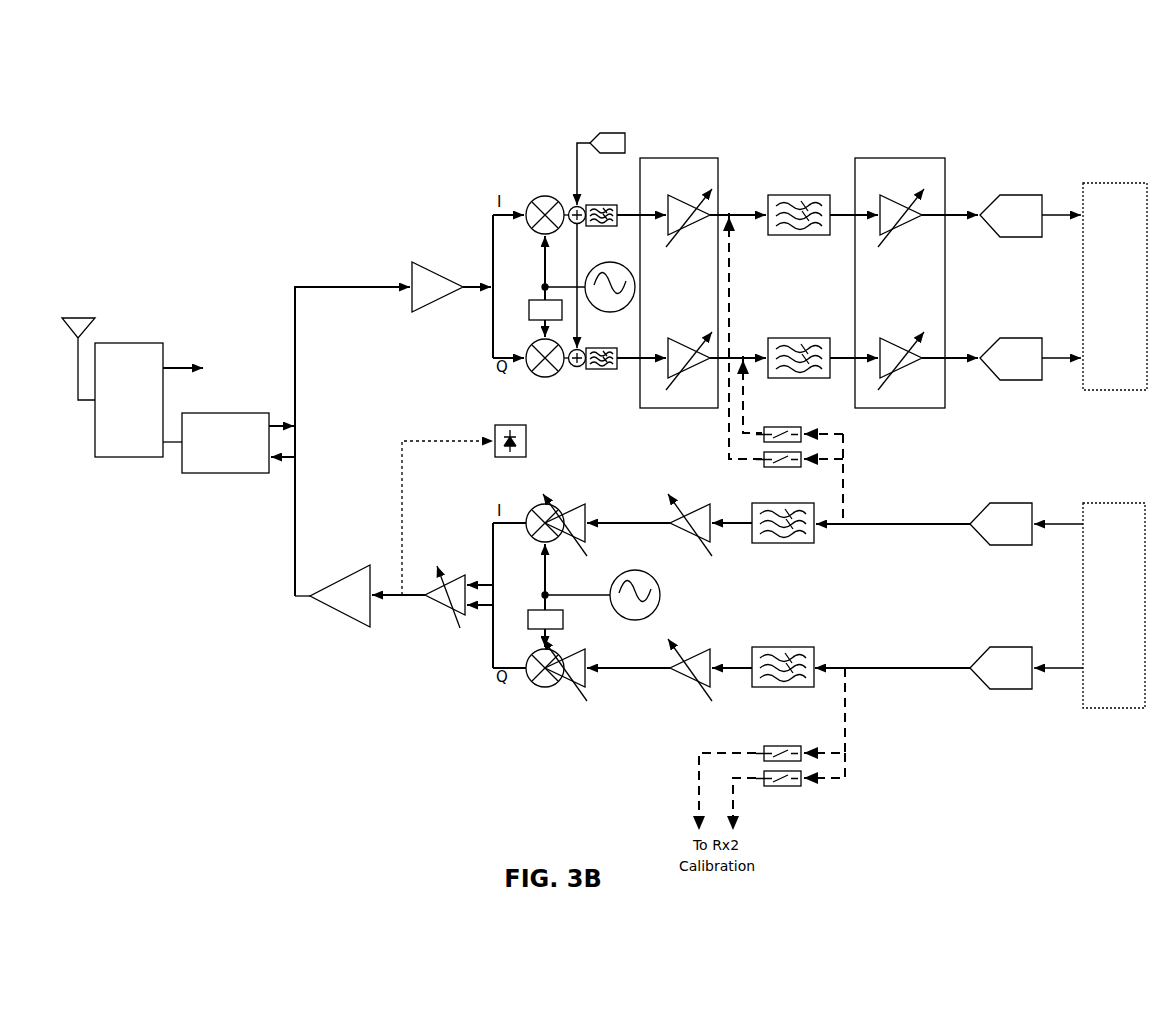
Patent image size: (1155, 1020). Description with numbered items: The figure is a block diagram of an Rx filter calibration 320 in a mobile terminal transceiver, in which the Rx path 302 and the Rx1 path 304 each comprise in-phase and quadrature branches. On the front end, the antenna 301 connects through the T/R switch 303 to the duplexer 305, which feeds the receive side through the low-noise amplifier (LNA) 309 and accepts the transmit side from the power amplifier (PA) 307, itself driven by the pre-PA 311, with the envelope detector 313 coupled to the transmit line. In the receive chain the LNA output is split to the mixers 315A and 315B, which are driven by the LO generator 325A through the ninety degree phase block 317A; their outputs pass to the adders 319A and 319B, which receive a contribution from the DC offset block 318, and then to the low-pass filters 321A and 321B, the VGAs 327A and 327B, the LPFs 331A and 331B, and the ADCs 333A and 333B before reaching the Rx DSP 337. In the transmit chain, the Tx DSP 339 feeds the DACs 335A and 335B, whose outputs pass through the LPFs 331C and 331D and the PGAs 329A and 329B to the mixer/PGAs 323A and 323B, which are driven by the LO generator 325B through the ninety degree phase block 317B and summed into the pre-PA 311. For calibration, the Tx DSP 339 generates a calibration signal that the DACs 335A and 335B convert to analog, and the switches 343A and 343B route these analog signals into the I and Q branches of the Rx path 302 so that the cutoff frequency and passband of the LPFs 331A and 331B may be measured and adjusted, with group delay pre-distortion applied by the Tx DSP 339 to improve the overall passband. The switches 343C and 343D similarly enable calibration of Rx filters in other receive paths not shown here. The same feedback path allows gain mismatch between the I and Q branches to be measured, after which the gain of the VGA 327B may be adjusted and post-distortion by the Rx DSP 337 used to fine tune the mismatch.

The Rx filter calibration 320 is at (120, 92).
The Rx path 302 is at (388, 154).
The Rx1 path 304 is at (351, 713).
The antenna 301 is at (65, 313).
The T/R switch 303 is at (116, 432).
The duplexer 305 is at (213, 463).
The power amplifier (PA) 307 is at (339, 572).
The low-noise amplifier (LNA) 309 is at (414, 262).
The pre-PA 311 is at (432, 609).
The envelope detector 313 is at (527, 438).
The mixer 315A is at (532, 196).
The mixer 315B is at (554, 385).
The 90 degree phase block 317A is at (527, 299).
The 90 degree phase block 317B is at (529, 608).
The DC offset block 318 is at (604, 131).
The adder 319A is at (600, 228).
The adder 319B is at (592, 368).
The low-pass filter (LPF) 321A is at (597, 206).
The low-pass filter (LPF) 321B is at (597, 350).
The mixer/PGA 323A is at (532, 504).
The mixer/PGA 323B is at (552, 688).
The LO generator 325A is at (590, 287).
The LO generator 325B is at (602, 595).
The VGA 327A is at (660, 310).
The VGA 327B is at (876, 310).
The PGA 329A is at (696, 504).
The PGA 329B is at (703, 648).
The LPF 331A is at (771, 194).
The LPF 331B is at (785, 338).
The LPF 331C is at (778, 545).
The LPF 331D is at (795, 646).
The ADC 333A is at (1024, 194).
The ADC 333B is at (1019, 337).
The DAC 335A is at (1007, 502).
The DAC 335B is at (1001, 646).
The Rx DSP 337 is at (1102, 319).
The Tx DSP 339 is at (1101, 640).
The switch 343A is at (782, 427).
The switch 343B is at (769, 470).
The switch 343C is at (784, 750).
The switch 343D is at (771, 789).